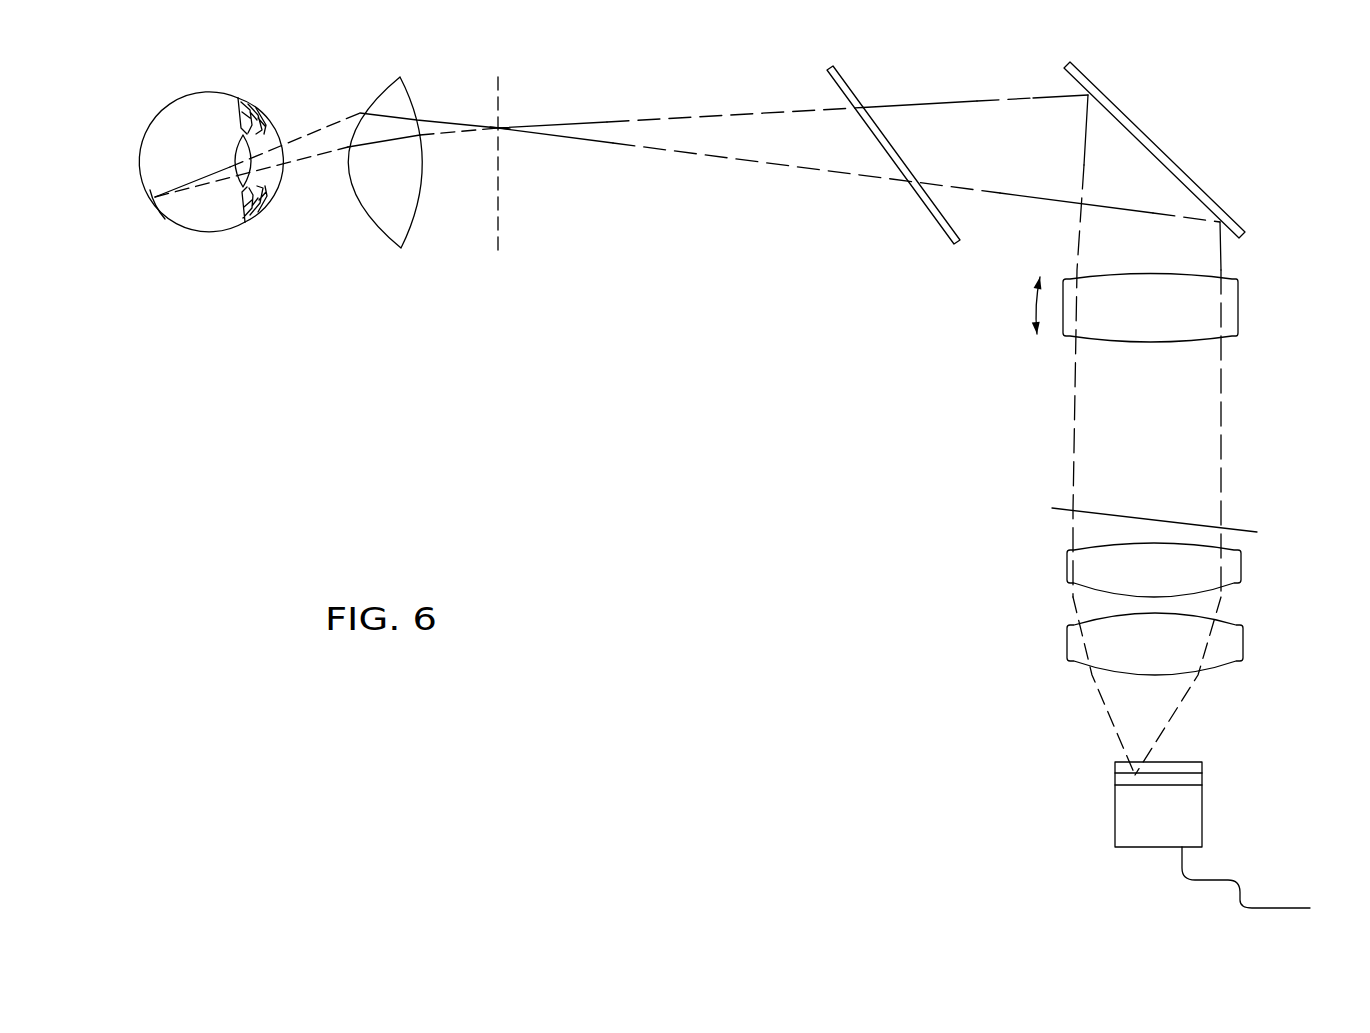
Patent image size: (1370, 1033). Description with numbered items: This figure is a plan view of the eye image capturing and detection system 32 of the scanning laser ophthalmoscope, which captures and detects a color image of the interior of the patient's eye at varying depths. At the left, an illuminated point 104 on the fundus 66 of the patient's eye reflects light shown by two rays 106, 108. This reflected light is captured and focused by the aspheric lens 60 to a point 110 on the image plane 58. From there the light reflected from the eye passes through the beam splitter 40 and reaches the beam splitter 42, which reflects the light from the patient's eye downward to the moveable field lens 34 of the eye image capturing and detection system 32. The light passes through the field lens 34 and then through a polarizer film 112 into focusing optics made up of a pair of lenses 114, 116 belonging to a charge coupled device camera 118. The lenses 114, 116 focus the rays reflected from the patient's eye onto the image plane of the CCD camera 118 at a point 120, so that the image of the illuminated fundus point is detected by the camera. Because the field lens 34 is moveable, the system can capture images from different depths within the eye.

The eye image capturing and detection system 32 is at (1245, 373).
The moveable field lens 34 is at (1246, 309).
The beam splitter 40 is at (853, 68).
The beam splitter 42 is at (1096, 70).
The image plane 58 is at (507, 74).
The aspheric lens 60 is at (403, 73).
The fundus 66 is at (143, 131).
The illuminated point 104 is at (159, 222).
The ray 106 is at (310, 126).
The ray 108 is at (307, 167).
The point 110 is at (507, 121).
The polarizer film 112 is at (1248, 520).
The lens 114 is at (1246, 574).
The lens 116 is at (1246, 649).
The charge coupled device (CCD) camera 118 is at (1205, 796).
The point 120 is at (1111, 768).